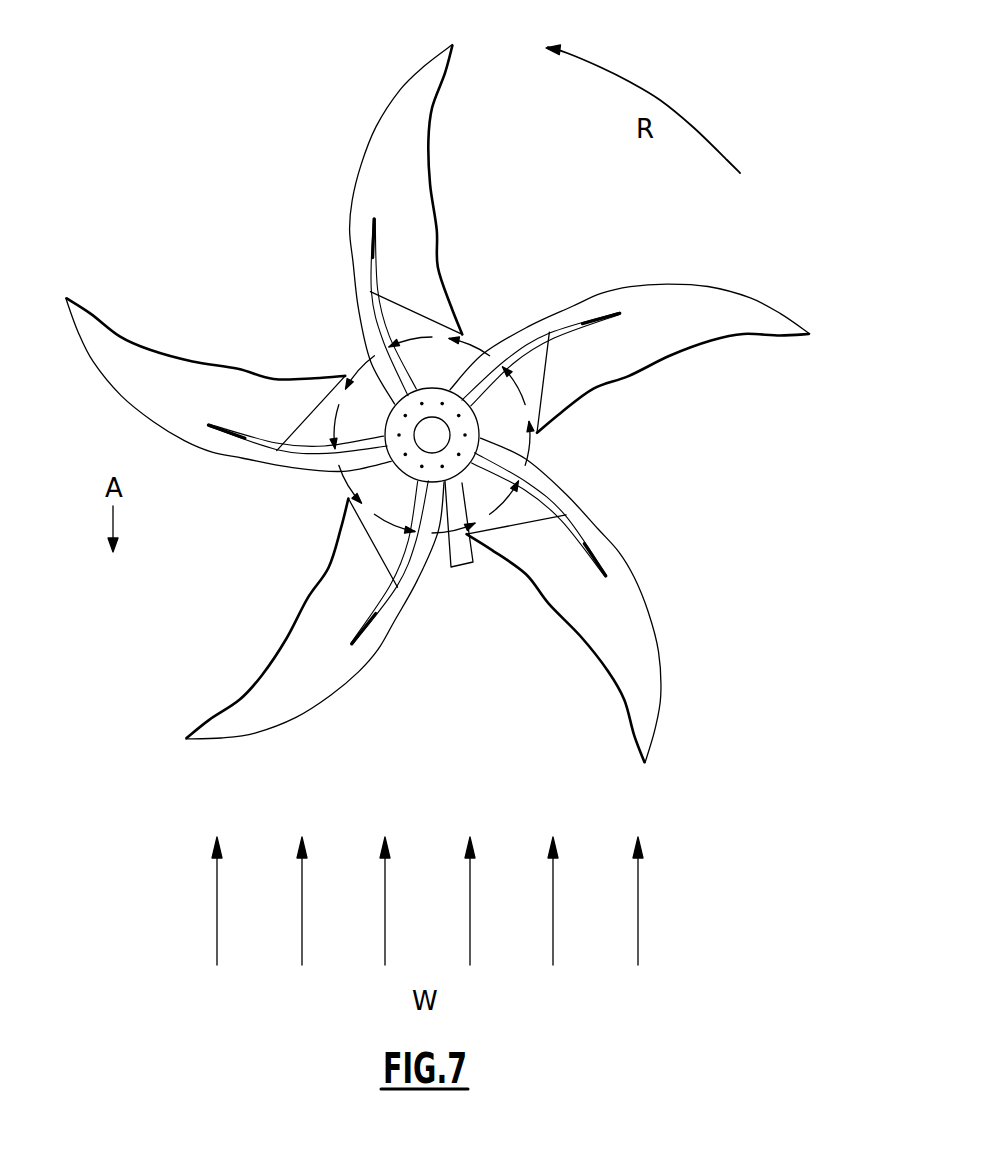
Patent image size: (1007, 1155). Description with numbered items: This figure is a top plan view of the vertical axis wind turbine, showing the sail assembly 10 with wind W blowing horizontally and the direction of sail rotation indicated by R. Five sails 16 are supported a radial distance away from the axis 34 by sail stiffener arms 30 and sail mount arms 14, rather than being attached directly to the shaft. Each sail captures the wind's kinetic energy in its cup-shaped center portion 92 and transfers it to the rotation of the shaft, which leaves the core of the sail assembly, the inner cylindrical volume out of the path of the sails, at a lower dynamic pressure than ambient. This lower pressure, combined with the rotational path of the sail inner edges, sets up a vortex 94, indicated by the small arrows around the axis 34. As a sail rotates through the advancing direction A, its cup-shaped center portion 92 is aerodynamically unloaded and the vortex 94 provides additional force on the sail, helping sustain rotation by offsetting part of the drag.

The sail assembly 10 is at (207, 245).
The sail mount arms 14 is at (374, 274).
The sails 16 is at (634, 379).
The sail stiffener arms 30 is at (312, 463).
The axis 34 is at (430, 435).
The cup-shaped center portion 92 is at (371, 419).
The vortex 94 is at (537, 440).